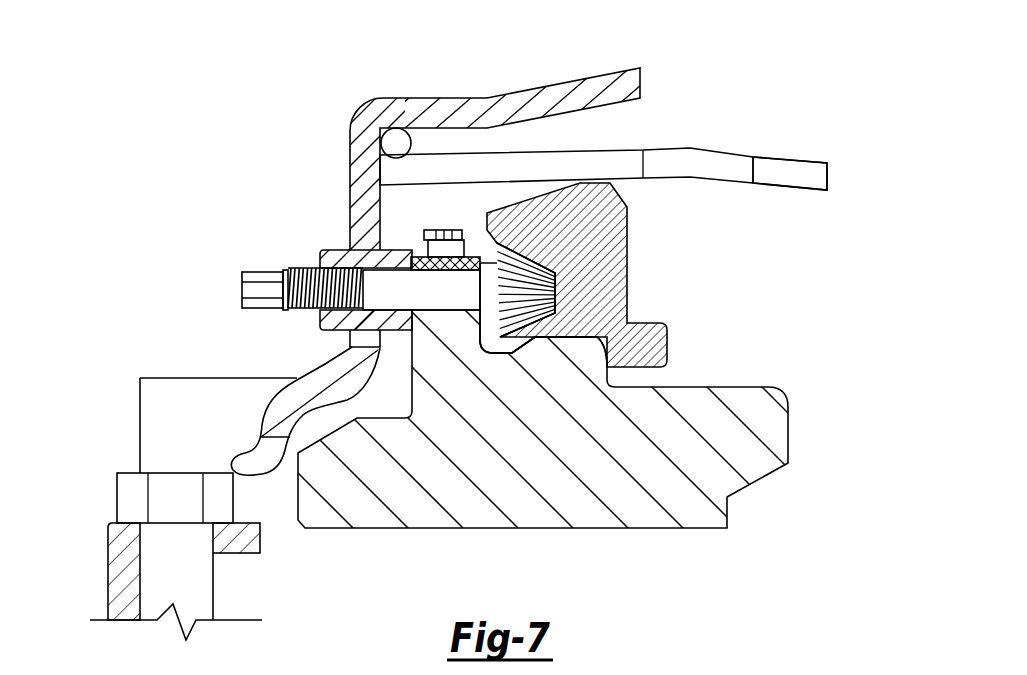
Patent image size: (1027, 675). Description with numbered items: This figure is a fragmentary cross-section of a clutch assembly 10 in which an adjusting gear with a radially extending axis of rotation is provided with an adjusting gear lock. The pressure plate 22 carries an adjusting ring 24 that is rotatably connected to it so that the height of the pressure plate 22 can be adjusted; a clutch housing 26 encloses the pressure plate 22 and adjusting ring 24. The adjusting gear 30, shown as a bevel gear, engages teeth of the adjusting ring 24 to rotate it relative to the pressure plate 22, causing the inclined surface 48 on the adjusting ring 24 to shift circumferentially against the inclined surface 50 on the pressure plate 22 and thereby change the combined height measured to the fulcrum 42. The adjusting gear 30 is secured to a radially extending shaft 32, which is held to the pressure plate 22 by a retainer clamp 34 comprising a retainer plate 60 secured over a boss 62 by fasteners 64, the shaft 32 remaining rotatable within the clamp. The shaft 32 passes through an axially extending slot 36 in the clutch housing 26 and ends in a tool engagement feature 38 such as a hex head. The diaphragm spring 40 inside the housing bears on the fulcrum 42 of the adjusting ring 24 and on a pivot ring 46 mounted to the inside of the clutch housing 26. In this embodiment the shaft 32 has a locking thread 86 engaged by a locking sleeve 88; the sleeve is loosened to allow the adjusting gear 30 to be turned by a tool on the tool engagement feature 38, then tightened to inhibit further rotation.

The steering knuckle assembly 10 is at (244, 178).
The pressure plate 22 is at (780, 440).
The adjusting ring 24 is at (617, 232).
The clutch housing 26 is at (501, 96).
The adjusting gear 30 is at (567, 293).
The shaft 32 is at (390, 290).
The retainer clamp 34 is at (176, 556).
The slot 36 is at (367, 343).
The tool engagement feature 38 is at (250, 292).
The diaphragm spring 40 is at (787, 163).
The fulcrum 42 is at (575, 183).
The pivot ring 46 is at (393, 140).
The inclined surface 48 is at (597, 340).
The inclined surface 50 is at (533, 340).
The retainer plate 60 is at (472, 258).
The boss 62 is at (427, 303).
The fasteners 64 is at (437, 229).
The locking thread 86 is at (307, 268).
The locking sleeve 88 is at (330, 249).